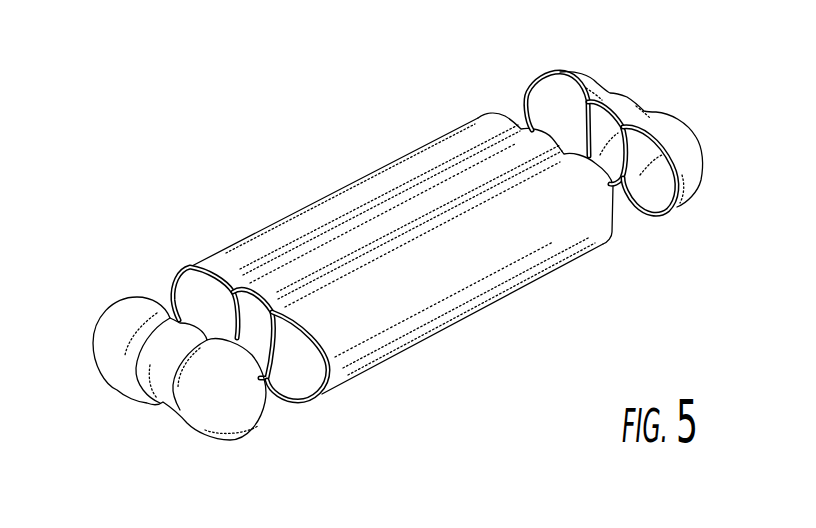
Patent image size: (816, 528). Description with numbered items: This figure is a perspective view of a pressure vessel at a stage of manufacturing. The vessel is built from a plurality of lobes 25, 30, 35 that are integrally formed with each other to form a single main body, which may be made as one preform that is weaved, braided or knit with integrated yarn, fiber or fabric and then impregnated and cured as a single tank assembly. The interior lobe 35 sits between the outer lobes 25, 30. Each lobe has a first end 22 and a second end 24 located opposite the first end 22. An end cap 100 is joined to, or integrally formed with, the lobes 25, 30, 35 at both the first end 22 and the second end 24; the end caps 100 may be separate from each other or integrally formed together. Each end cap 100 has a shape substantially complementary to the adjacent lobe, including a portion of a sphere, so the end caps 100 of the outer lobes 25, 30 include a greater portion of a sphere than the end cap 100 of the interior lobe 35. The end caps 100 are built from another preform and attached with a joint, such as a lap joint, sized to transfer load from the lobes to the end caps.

The first end 22 is at (182, 272).
The second end 24 is at (498, 110).
The lobe 25 is at (290, 211).
The lobe 30 is at (462, 273).
The interior lobe 35 is at (473, 178).
The end cap 100 is at (160, 405).